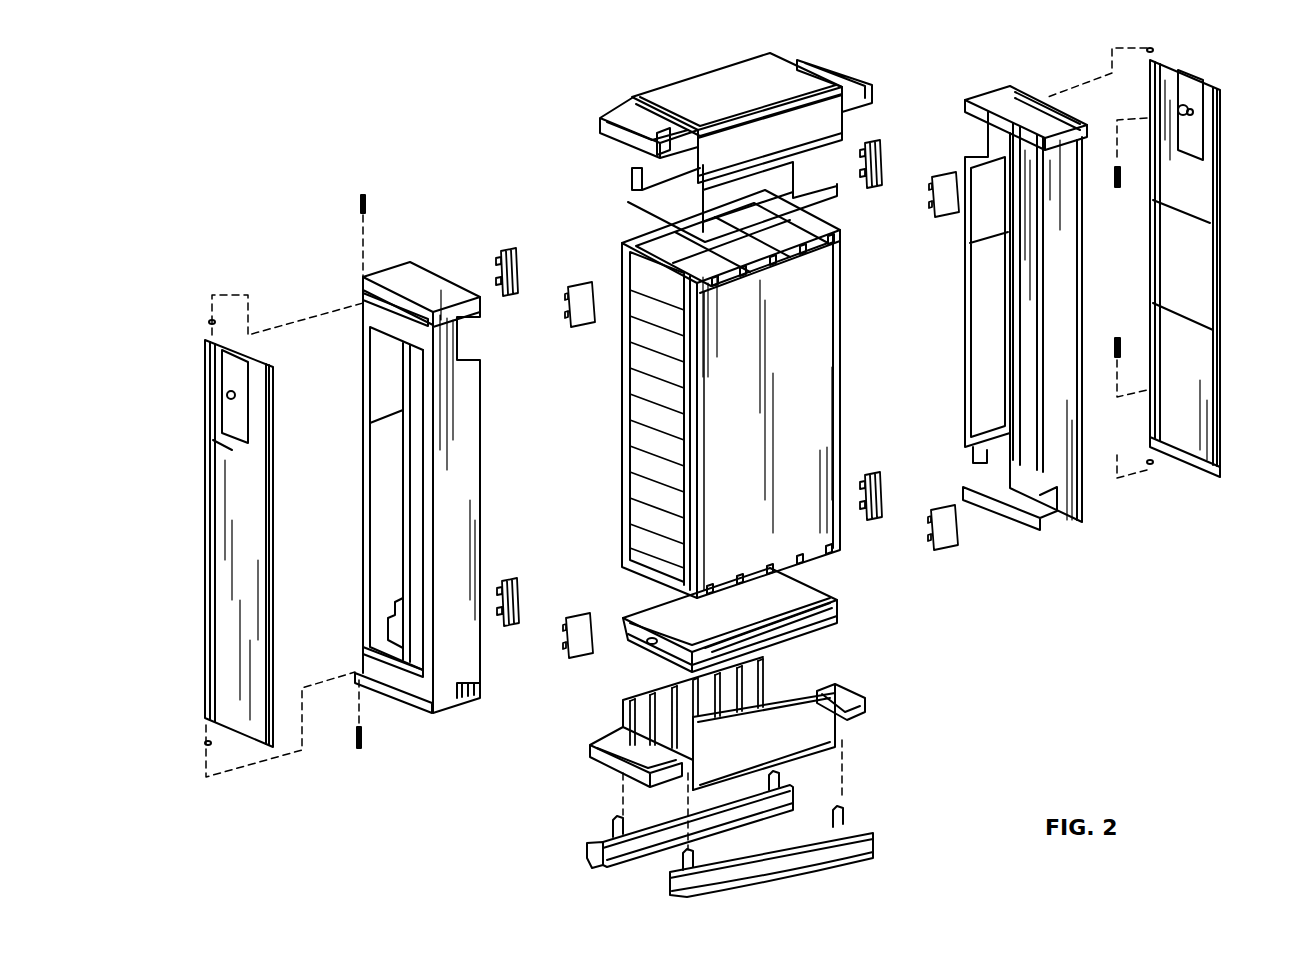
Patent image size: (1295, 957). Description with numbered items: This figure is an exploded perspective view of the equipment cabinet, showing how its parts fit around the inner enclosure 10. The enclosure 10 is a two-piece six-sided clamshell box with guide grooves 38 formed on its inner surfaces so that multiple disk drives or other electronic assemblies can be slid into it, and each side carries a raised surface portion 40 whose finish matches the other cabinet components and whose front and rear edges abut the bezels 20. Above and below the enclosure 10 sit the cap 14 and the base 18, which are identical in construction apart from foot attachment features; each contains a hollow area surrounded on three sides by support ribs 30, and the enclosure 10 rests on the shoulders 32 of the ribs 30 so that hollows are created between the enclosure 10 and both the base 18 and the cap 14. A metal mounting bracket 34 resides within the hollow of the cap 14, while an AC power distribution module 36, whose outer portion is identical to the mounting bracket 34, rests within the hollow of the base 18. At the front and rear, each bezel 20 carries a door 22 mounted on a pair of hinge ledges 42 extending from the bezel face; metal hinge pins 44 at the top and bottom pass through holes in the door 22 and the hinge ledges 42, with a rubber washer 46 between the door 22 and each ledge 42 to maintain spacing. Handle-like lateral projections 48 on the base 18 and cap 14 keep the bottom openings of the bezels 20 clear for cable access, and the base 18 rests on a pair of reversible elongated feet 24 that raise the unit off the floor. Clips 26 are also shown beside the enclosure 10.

The inner enclosure 10 is at (842, 397).
The cap 14 is at (722, 72).
The base 18 is at (833, 752).
The bezel 20 is at (417, 268).
The door 22 is at (208, 557).
The reversible elongated feet 24 is at (672, 890).
The clip 26 is at (578, 281).
The support ribs 30 is at (780, 688).
The shoulders 32 is at (690, 680).
The metal mounting bracket 34 is at (630, 201).
The AC power distribution module 36 is at (838, 610).
The guide grooves 38 is at (630, 390).
The raised surface portion 40 is at (822, 305).
The hinge ledges 42 is at (362, 293).
The metal hinge pins 44 is at (358, 205).
The rubber washer 46 is at (209, 320).
The handle-like lateral projections 48 is at (600, 126).